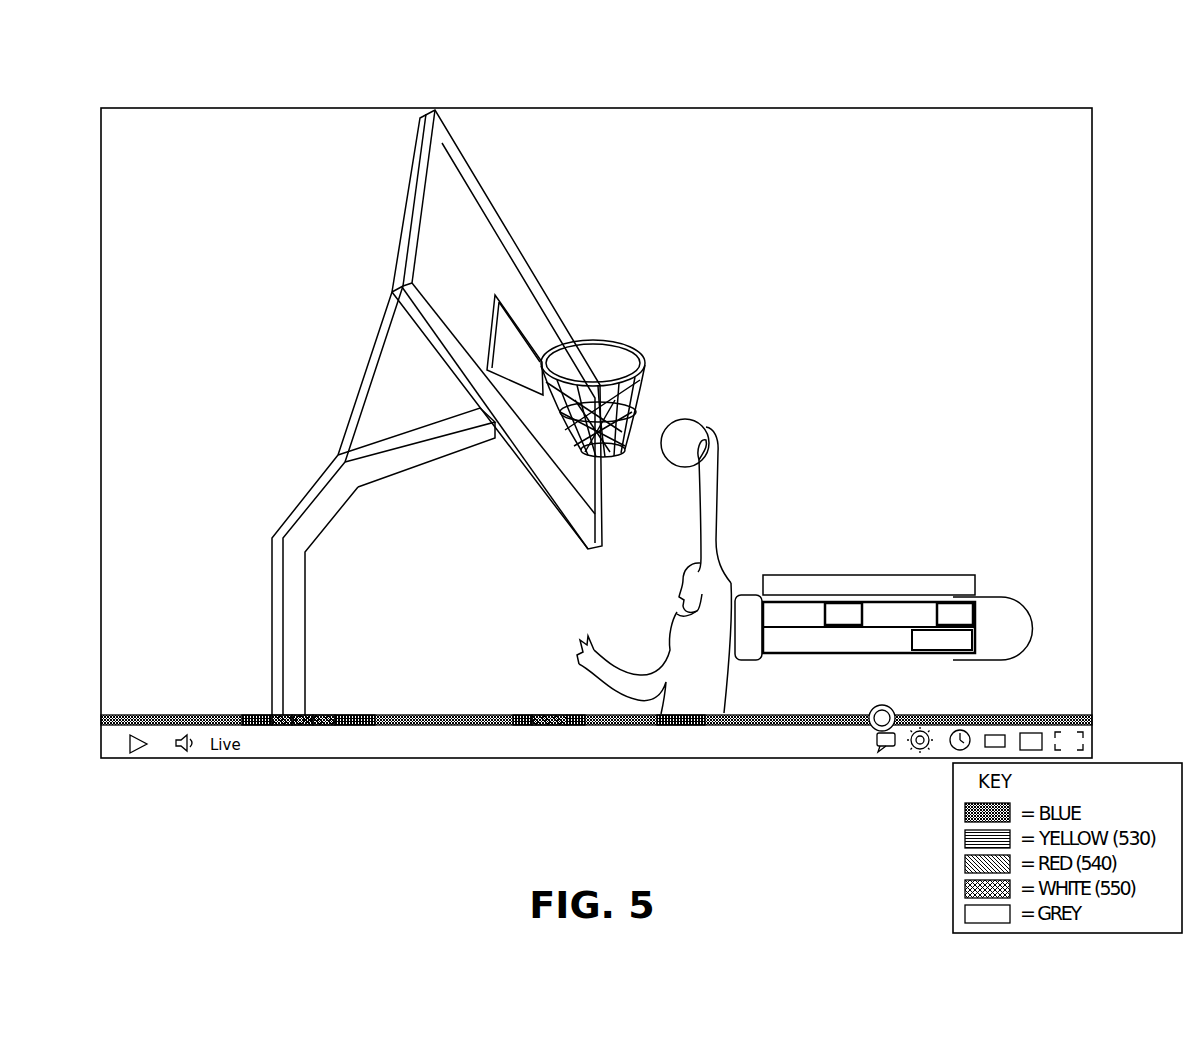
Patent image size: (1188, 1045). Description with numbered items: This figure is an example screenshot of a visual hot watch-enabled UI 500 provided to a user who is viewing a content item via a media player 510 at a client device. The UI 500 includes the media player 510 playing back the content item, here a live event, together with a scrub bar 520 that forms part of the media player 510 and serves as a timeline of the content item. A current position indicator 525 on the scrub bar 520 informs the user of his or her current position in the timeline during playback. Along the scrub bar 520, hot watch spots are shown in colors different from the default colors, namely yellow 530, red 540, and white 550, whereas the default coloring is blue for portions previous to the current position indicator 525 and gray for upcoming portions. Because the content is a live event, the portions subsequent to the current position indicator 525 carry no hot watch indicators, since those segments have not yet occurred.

The visual hot watch-enabled UI 500 is at (141, 55).
The media player 510 is at (96, 277).
The scrub bar 520 is at (100, 717).
The current position indicator 525 is at (872, 733).
The yellow hot watch spot 530 is at (678, 729).
The red hot watch spot 540 is at (277, 727).
The white hot watch spot 550 is at (300, 727).